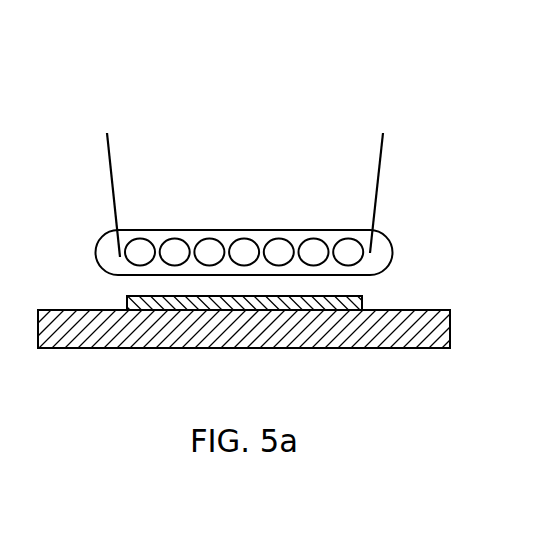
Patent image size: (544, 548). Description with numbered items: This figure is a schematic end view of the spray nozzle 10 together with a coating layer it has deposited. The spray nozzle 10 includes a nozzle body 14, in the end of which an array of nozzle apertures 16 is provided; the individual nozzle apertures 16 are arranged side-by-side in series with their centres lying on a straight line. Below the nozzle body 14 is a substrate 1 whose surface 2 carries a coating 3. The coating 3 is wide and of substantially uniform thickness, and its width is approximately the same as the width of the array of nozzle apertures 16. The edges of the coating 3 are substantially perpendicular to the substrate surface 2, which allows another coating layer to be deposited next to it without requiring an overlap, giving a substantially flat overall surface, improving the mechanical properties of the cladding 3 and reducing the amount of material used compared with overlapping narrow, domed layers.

The spray nozzle 10 is at (259, 166).
The nozzle body 14 is at (111, 173).
The nozzle apertures 16 is at (140, 253).
The substrate 1 is at (402, 325).
The surface 2 is at (420, 310).
The coating 3 is at (272, 312).